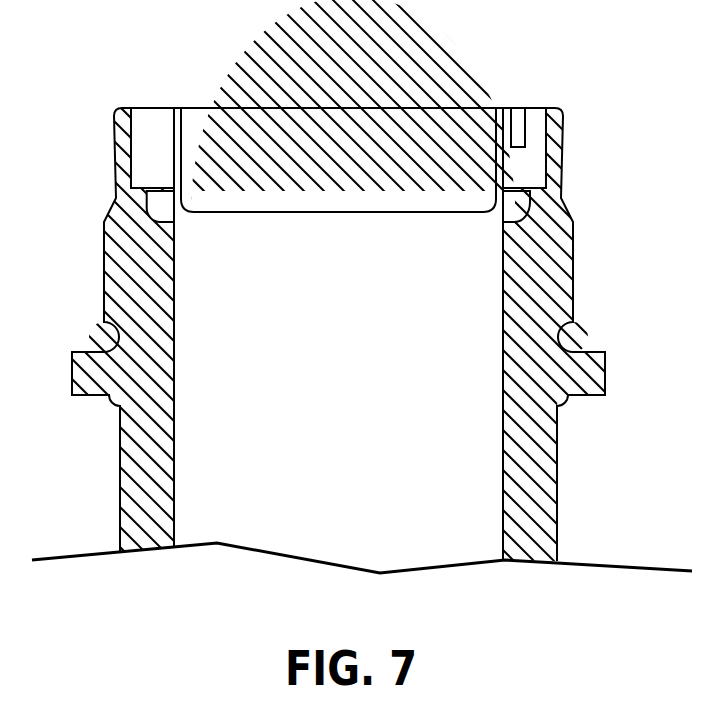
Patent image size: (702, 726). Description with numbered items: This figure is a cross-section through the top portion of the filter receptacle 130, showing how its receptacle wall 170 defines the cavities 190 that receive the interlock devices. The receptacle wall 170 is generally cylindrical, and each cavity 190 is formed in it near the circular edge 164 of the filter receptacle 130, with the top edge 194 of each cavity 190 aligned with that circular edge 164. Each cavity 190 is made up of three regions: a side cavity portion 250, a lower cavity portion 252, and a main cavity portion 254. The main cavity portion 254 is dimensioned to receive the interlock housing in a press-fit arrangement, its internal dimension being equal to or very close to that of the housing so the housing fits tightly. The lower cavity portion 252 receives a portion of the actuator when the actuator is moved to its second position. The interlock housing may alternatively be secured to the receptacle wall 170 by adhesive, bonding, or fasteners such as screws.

The filter receptacle 130 is at (575, 263).
The circular edge 164 is at (337, 108).
The receptacle wall 170 is at (174, 458).
The cavity 190 is at (160, 120).
The top edge 194 is at (138, 108).
The side cavity portion 250 is at (518, 117).
The lower cavity portion 252 is at (155, 194).
The main cavity portion 254 is at (172, 165).